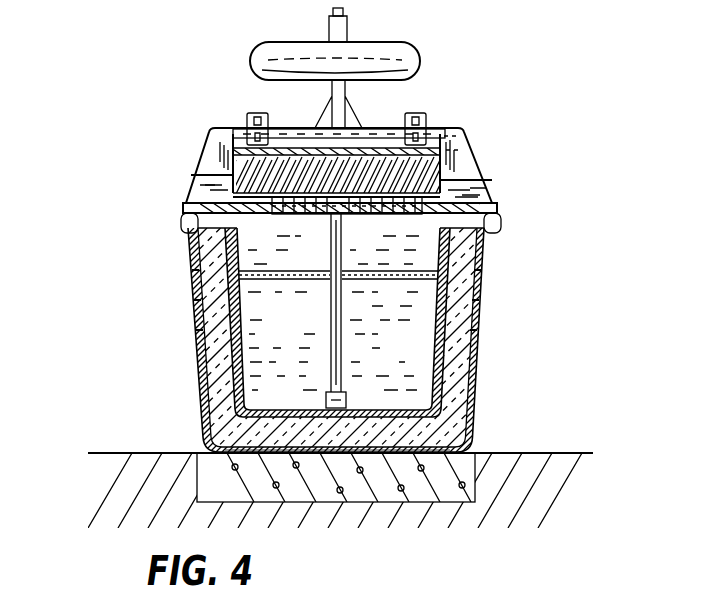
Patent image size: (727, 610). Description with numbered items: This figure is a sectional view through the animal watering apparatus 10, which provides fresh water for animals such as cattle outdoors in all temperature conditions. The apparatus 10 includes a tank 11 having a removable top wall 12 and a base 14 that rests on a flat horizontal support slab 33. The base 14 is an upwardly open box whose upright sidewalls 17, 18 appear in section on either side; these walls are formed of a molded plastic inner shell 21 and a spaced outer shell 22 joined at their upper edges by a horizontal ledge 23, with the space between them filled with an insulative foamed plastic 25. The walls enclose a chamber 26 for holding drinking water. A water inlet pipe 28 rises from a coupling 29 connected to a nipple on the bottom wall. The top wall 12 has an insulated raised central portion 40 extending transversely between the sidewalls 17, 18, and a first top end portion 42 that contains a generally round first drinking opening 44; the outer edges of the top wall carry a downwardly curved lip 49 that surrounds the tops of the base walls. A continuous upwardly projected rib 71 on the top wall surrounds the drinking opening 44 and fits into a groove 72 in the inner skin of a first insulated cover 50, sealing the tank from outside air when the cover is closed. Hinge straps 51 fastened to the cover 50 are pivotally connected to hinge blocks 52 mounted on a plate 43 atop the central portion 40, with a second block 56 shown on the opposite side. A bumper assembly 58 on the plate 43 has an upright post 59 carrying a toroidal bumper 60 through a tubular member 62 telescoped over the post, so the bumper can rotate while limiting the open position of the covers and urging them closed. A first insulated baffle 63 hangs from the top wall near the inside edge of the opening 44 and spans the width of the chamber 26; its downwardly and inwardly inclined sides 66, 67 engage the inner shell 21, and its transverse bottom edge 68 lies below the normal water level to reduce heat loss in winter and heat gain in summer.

The animal watering apparatus 10 is at (337, 125).
The tank 11 is at (355, 332).
The top wall 12 is at (318, 162).
The base 14 is at (355, 340).
The sidewall 17 is at (196, 305).
The sidewall 18 is at (482, 283).
The inner shell 21 is at (338, 311).
The outer shell 22 is at (206, 403).
The horizontal ledge 23 is at (205, 266).
The foamed plastic 25 is at (225, 375).
The chamber 26 is at (310, 352).
The water inlet pipe 28 is at (343, 351).
The coupling 29 is at (346, 396).
The support slab 33 is at (460, 478).
The raised central portion 40 is at (463, 160).
The first top end portion 42 is at (470, 195).
The plate 43 is at (368, 127).
The first drinking opening 44 is at (347, 223).
The downwardly curved lip 49 is at (186, 220).
The first insulated cover 50 is at (248, 172).
The hinge straps 51 is at (262, 126).
The hinge blocks 52 is at (256, 113).
The clamp 56 is at (413, 113).
The bumper assembly 58 is at (348, 64).
The post 59 is at (344, 16).
The toroidal bumper 60 is at (287, 45).
The tubular member 62 is at (332, 36).
The first baffle 63 is at (430, 270).
The inclined side 66 is at (302, 300).
The inclined side 67 is at (436, 265).
The bottom edge 68 is at (284, 295).
The rib 71 is at (378, 214).
The groove 72 is at (270, 200).